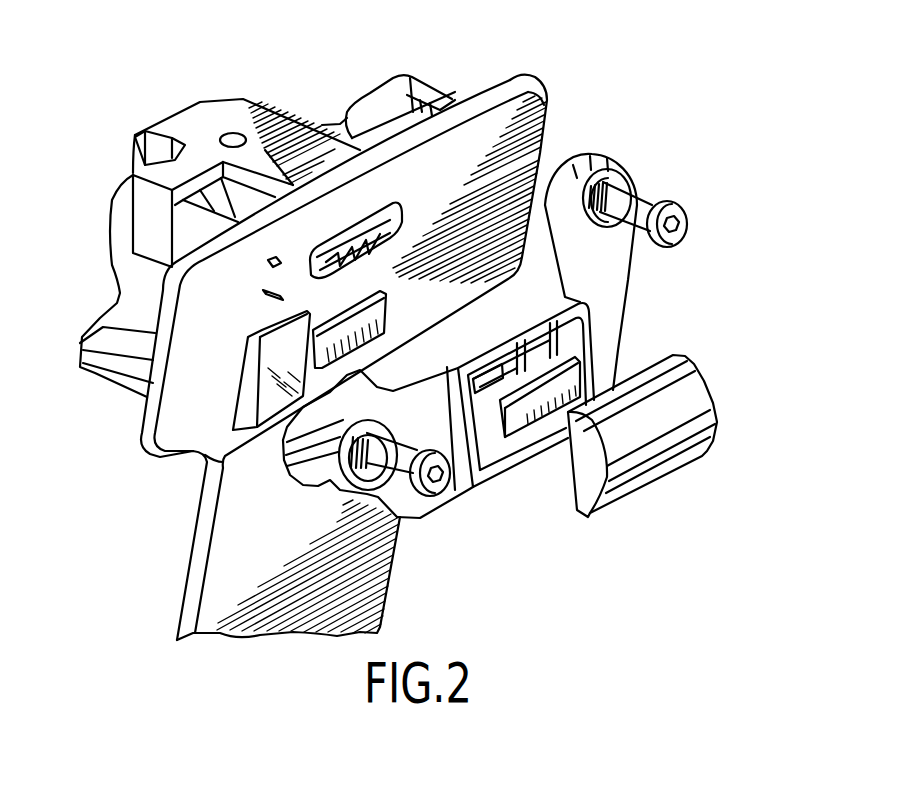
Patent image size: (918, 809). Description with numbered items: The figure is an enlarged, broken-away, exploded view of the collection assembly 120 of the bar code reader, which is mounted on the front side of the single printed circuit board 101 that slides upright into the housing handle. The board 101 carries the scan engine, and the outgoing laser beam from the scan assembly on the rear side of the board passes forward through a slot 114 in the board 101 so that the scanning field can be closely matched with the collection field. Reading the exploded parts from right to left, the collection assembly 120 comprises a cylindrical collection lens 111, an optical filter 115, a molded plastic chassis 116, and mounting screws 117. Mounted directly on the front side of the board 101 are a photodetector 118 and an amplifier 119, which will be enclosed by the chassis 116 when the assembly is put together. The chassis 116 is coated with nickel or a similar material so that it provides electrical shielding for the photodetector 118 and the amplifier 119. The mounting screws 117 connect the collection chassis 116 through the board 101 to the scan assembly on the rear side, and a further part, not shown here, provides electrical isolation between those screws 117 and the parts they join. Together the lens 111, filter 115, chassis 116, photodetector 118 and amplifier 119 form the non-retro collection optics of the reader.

The printed circuit board 101 is at (547, 86).
The cylindrical collection lens 111 is at (693, 412).
The slot 114 is at (396, 212).
The optical filter 115 is at (576, 378).
The molded plastic chassis 116 is at (610, 280).
The mounting screws 117 is at (675, 203).
The photodetector 118 is at (380, 318).
The amplifier 119 is at (262, 394).
The collection assembly 120 is at (648, 112).